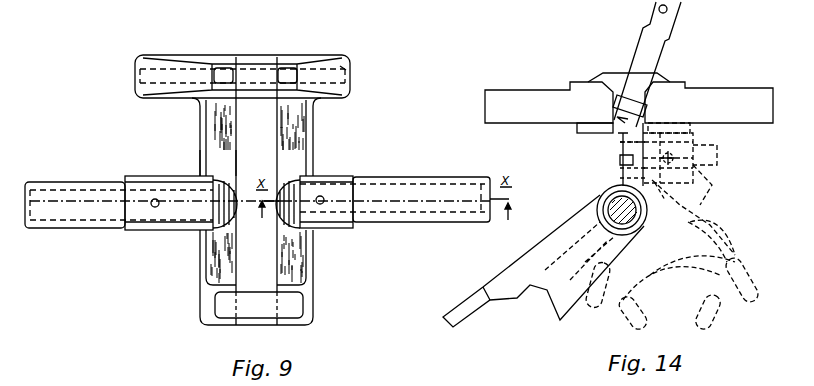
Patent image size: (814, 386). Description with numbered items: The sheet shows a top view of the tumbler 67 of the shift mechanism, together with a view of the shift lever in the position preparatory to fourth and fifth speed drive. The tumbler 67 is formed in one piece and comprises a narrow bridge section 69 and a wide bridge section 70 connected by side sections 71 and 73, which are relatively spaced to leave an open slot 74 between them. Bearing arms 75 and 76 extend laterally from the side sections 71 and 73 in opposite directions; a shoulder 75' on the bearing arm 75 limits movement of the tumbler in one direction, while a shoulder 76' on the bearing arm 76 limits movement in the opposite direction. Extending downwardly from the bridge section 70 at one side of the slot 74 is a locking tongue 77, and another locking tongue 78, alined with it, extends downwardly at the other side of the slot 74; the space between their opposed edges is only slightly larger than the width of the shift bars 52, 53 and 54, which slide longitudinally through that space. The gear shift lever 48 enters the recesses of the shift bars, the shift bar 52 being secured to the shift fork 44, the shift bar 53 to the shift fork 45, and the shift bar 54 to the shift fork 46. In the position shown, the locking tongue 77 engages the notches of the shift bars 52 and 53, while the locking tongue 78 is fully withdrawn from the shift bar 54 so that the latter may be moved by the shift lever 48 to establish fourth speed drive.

In FIG. 9, the wide bridge section 70 is at (311, 57).
In FIG. 9, the locking tongue 77 is at (165, 72).
In FIG. 14, the locking tongue 77 is at (702, 128).
In FIG. 9, the locking tongue 78 is at (341, 68).
In FIG. 14, the locking tongue 78 is at (578, 128).
In FIG. 9, the side section 73 is at (304, 146).
In FIG. 9, the side section 71 is at (206, 153).
In FIG. 9, the open slot 74 is at (274, 160).
In FIG. 9, the narrow bridge section 69 is at (313, 307).
In FIG. 9, the tumbler 67 is at (167, 268).
In FIG. 14, the tumbler 67 is at (715, 90).
In FIG. 9, the bearing arm 75 is at (119, 195).
In FIG. 9, the shoulder 75' is at (166, 214).
In FIG. 9, the shoulder 76' is at (326, 192).
In FIG. 9, the bearing arm 76 is at (395, 189).
In FIG. 14, the gear shift lever 48 is at (656, 51).
In FIG. 14, the shift bar 54 is at (618, 146).
In FIG. 14, the shift bar 52 is at (708, 144).
In FIG. 14, the shift bar 53 is at (652, 178).
In FIG. 14, the shift fork 44 is at (711, 186).
In FIG. 14, the shift fork 46 is at (565, 226).
In FIG. 14, the shift fork 45 is at (727, 243).